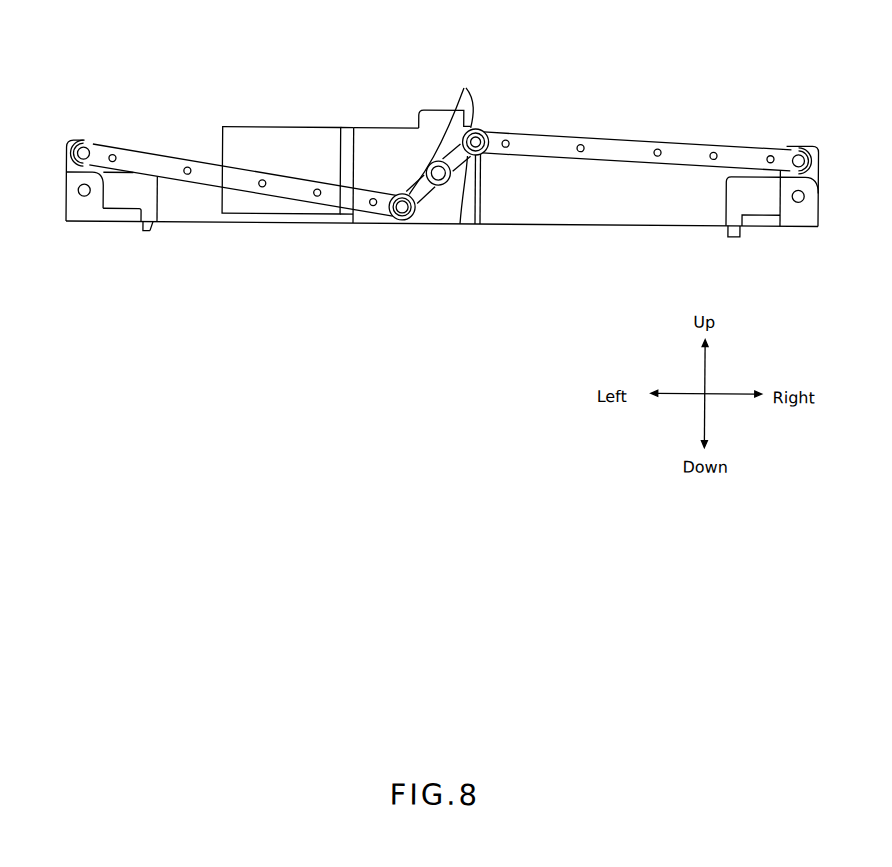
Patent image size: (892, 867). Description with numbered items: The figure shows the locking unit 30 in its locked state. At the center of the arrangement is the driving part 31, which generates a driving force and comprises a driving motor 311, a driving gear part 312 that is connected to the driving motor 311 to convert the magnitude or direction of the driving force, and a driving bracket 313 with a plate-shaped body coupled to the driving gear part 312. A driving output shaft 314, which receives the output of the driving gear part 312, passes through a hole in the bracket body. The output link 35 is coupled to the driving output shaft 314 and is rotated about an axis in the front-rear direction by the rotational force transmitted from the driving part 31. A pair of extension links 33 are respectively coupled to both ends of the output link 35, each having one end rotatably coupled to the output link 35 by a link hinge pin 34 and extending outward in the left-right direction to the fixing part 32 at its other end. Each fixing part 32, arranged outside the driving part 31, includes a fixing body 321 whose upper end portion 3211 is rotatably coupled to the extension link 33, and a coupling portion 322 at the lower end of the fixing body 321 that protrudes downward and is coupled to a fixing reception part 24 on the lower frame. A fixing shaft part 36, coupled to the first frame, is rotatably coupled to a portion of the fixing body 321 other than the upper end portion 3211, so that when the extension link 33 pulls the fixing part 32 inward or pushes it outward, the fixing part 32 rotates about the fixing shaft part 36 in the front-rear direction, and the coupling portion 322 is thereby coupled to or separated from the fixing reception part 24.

The locking unit 30 is at (470, 356).
The driving part 31 is at (346, 121).
The driving motor 311 is at (268, 125).
The driving gear part 312 is at (378, 124).
The driving bracket 313 is at (420, 88).
The driving output shaft 314 is at (437, 182).
The fixing part 32 is at (435, 185).
The upper end portion 3211 is at (68, 152).
The fixing body 321 is at (121, 222).
The coupling portion 322 is at (150, 233).
The fixing reception part 24 is at (153, 228).
The extension link 33 is at (183, 158).
The link hinge pin 34 is at (439, 173).
The output link 35 is at (478, 221).
The fixing shaft part 36 is at (93, 228).